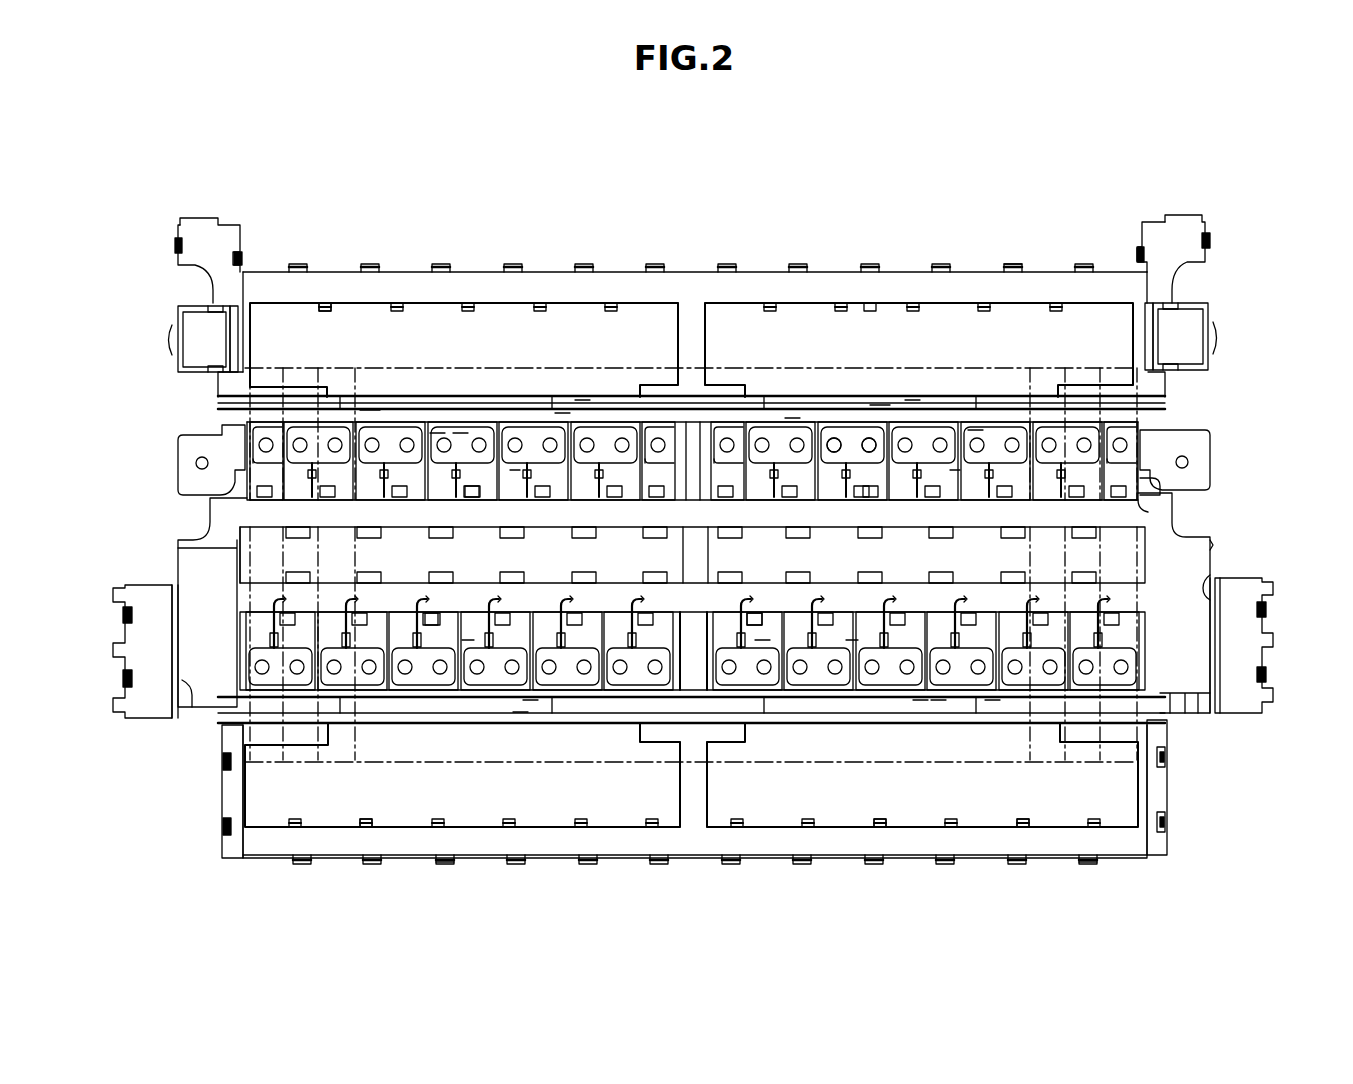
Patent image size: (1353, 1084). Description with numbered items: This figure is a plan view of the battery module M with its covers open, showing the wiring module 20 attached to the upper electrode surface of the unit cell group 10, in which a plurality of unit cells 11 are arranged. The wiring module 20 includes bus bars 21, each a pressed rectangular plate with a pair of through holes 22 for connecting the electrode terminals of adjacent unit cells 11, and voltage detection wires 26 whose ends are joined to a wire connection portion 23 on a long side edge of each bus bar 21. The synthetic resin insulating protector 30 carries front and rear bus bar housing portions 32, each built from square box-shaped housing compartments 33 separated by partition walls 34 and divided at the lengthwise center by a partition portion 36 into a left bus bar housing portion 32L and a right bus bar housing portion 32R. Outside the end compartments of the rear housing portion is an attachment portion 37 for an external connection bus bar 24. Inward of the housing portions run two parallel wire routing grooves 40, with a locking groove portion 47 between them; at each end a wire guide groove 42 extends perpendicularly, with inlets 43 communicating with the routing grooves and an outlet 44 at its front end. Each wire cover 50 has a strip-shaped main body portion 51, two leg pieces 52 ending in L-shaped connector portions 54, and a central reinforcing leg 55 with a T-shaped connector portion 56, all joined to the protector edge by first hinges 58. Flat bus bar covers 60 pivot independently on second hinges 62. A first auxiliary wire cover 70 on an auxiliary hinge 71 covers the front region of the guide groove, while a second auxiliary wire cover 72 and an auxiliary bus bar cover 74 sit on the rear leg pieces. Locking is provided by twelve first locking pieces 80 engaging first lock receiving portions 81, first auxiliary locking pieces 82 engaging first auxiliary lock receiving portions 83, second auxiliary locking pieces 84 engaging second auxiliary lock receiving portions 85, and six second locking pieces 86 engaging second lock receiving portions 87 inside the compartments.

The unit cell group 10 is at (618, 762).
The unit cell 11 is at (252, 760).
The wiring module 20 is at (618, 220).
The bus bar 21 is at (460, 490).
The through hole 22 is at (868, 435).
The wire connection portion 23 is at (920, 700).
The external connection bus bar 24 is at (195, 445).
The voltage detection wire 26 is at (515, 470).
The insulating protector 30 is at (210, 505).
The bus bar housing portion 32 is at (793, 418).
The left bus bar housing portion 32L is at (368, 410).
The right bus bar housing portion 32R is at (880, 405).
The housing compartment 33 is at (383, 435).
The partition wall 34 is at (437, 433).
The partition portion 36 is at (713, 390).
The attachment portion 37 is at (1160, 483).
The wire routing groove 40 is at (562, 413).
The wire guide groove 42 is at (187, 705).
The inlet 43 is at (1152, 500).
The outlet 44 is at (1205, 705).
The locking groove portion 47 is at (258, 535).
The wire cover 50 is at (632, 268).
The main body portion 51 is at (460, 433).
The leg piece 52 is at (225, 390).
The connector portion 54 is at (290, 400).
The reinforcing leg 55 is at (693, 330).
The connector portion 56 is at (700, 440).
The first hinge 58 is at (262, 405).
The bus bar cover 60 is at (372, 330).
The second hinge 62 is at (582, 400).
The first auxiliary wire cover 70 is at (140, 632).
The auxiliary hinge 71 is at (1215, 650).
The second auxiliary wire cover 72 is at (195, 235).
The auxiliary bus bar cover 74 is at (190, 340).
The first locking piece 80 is at (1013, 262).
The first lock receiving portion 81 is at (445, 578).
The first auxiliary locking piece 82 is at (1268, 612).
The first auxiliary lock receiving portion 83 is at (1165, 758).
The second auxiliary locking piece 84 is at (1143, 255).
The second auxiliary lock receiving portion 85 is at (1213, 545).
The second locking piece 86 is at (325, 306).
The second lock receiving portion 87 is at (440, 603).
The battery module M is at (948, 192).